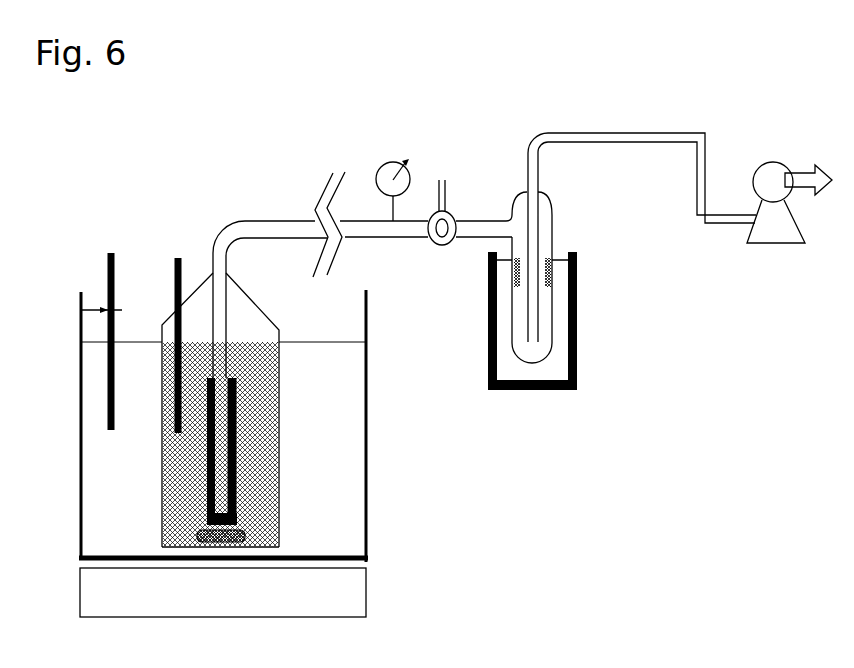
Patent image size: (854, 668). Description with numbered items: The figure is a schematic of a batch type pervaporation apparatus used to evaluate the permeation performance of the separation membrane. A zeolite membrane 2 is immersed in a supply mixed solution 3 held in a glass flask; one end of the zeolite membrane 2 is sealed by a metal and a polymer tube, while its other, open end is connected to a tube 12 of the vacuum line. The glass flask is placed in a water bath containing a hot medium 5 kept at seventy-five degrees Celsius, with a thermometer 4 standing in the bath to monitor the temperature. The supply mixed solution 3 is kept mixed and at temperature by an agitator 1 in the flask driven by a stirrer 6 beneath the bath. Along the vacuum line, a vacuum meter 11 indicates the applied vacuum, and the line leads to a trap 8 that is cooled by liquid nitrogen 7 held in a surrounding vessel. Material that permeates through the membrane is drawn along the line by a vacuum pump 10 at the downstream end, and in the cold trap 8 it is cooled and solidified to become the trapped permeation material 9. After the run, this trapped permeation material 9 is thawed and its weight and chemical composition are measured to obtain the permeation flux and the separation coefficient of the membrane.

The agitator 1 is at (243, 537).
The zeolite membrane 2 is at (243, 457).
The supply mixed solution 3 is at (250, 487).
The thermometer 4 is at (125, 341).
The hot medium 5 is at (223, 426).
The stirrer 6 is at (223, 592).
The liquid nitrogen 7 is at (558, 363).
The trap 8 is at (634, 248).
The trapped permeation material 9 is at (552, 277).
The vacuum pump 10 is at (789, 225).
The vacuum meter 11 is at (391, 177).
The tube of vacuum line 12 is at (441, 193).